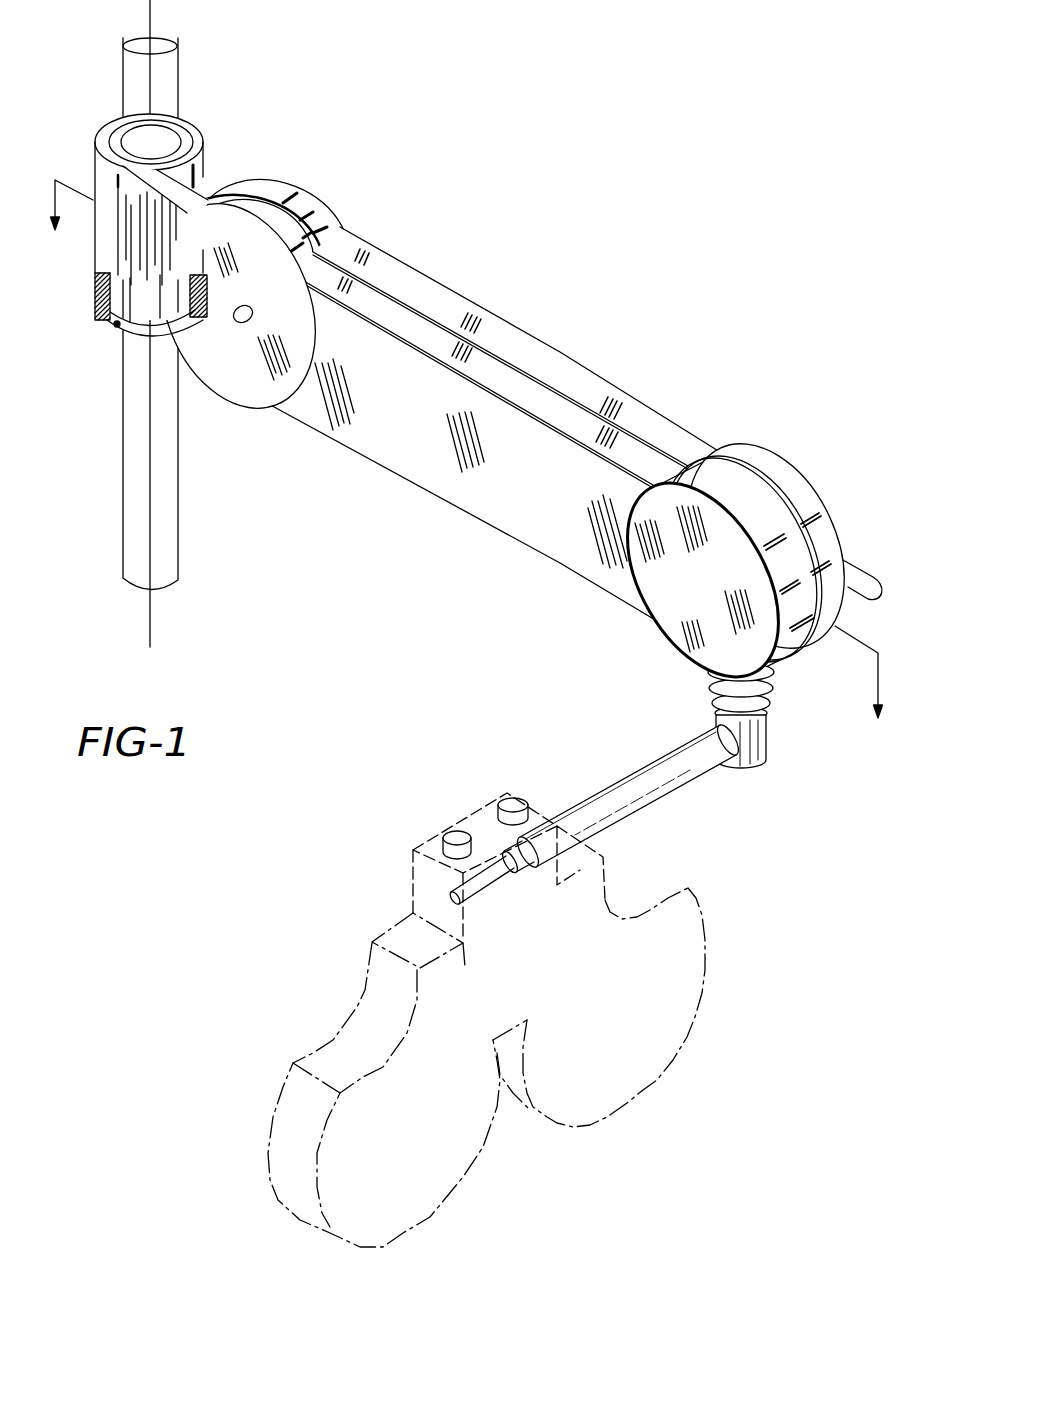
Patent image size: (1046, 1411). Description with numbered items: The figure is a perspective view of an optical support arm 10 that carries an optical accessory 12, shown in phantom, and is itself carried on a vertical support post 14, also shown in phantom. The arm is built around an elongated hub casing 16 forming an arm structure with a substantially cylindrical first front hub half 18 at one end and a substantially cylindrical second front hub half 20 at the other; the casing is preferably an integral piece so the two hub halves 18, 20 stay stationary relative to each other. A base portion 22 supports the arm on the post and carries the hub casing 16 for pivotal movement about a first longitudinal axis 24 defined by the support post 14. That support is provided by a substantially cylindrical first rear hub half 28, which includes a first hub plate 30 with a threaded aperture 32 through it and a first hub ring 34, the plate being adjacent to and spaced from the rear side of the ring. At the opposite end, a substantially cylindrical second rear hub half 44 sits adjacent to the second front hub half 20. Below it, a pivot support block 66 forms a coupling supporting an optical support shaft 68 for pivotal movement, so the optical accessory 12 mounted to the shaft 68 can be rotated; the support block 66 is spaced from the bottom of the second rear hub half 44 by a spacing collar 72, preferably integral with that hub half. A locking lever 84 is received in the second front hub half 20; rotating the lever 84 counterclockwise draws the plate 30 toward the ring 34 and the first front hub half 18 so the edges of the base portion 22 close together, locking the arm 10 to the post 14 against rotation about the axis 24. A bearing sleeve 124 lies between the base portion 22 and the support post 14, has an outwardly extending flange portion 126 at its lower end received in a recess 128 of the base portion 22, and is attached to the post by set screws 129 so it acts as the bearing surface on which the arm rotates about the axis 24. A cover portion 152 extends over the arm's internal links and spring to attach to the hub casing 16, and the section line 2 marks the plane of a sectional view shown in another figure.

The section line 2- 2 is at (466, 466).
The optical support arm 10 is at (487, 407).
The optical accessory 12 is at (650, 1087).
The vertical support post 14 is at (182, 562).
The hub casing 16 is at (475, 407).
The first front hub half 18 is at (289, 201).
The second front hub half 20 is at (778, 447).
The base portion 22 is at (141, 311).
The first longitudinal axis 24 is at (152, 622).
The first rear hub half 28 is at (238, 362).
The first hub plate 30 is at (268, 399).
The threaded aperture 32 is at (243, 320).
The first hub ring 34 is at (250, 207).
The second rear hub half 44 is at (680, 606).
The pivot support block 66 is at (752, 752).
The optical support shaft 68 is at (663, 797).
The spacing collar 72 is at (773, 690).
The locking lever 84 is at (867, 562).
The bearing sleeve 124 is at (148, 307).
The flange portion 126 is at (155, 338).
The recess 128 is at (115, 321).
The set screws 129 is at (128, 335).
The cover portion 152 is at (460, 488).